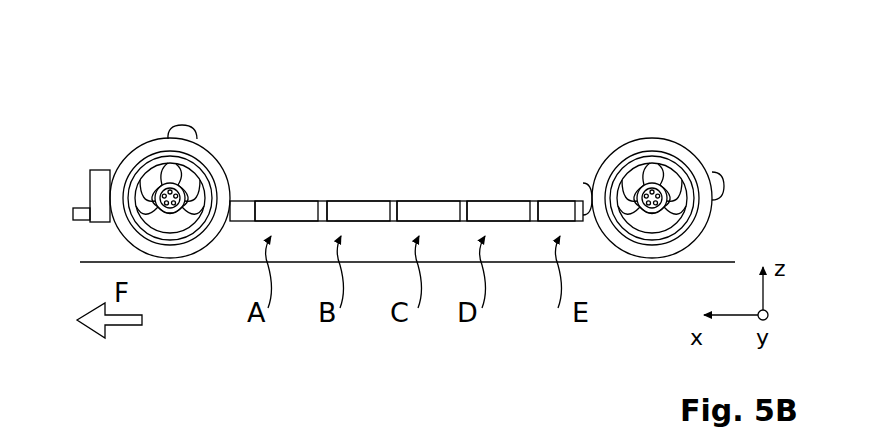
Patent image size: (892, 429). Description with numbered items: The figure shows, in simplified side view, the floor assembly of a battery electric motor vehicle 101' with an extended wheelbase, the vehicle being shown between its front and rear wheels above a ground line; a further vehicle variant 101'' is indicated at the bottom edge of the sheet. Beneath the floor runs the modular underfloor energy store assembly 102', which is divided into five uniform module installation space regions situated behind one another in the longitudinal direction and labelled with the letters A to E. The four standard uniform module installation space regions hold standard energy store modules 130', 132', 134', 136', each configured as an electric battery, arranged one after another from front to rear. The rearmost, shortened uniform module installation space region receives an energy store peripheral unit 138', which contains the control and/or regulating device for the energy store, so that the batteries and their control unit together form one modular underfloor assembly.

The motor vehicle 101' is at (404, 131).
The vehicle (second variant) 101'' is at (532, 422).
The underfloor energy store assembly 102' is at (424, 134).
The standard energy store module 130' is at (281, 168).
The standard energy store module 132' is at (354, 168).
The standard energy store module 134' is at (422, 168).
The standard energy store module 136' is at (492, 168).
The energy store peripheral unit 138' is at (578, 168).